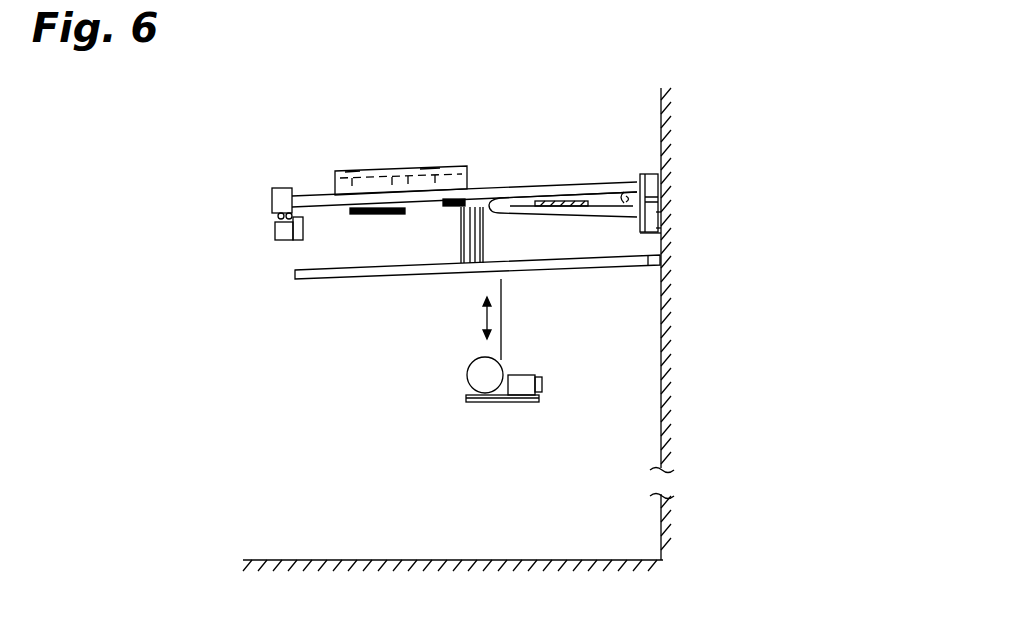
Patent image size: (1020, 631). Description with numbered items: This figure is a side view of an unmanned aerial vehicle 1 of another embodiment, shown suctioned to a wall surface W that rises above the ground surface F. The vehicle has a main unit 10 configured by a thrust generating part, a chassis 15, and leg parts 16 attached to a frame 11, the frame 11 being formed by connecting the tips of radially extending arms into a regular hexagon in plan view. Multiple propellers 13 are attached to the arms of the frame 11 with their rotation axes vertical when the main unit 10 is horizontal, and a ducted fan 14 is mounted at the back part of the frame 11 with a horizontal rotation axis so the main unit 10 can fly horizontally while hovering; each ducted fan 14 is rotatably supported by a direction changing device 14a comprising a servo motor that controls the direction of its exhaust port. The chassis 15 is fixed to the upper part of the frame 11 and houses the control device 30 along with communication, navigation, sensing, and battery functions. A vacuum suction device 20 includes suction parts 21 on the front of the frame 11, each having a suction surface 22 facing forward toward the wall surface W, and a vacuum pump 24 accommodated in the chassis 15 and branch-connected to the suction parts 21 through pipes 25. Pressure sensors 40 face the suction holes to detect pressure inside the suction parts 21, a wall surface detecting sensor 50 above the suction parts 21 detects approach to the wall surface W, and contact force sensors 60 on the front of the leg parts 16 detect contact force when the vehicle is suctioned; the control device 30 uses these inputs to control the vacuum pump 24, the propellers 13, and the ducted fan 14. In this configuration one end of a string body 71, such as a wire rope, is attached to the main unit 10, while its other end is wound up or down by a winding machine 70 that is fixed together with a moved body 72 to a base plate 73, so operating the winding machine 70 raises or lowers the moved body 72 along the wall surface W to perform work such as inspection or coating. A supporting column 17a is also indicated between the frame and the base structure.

The unmanned aerial vehicle 1 is at (574, 121).
The main unit 10 is at (524, 186).
The frame 11 is at (548, 187).
The propellers 13 is at (365, 215).
The ducted fan 14 is at (276, 232).
The direction changing device 14a is at (273, 199).
The chassis 15 is at (336, 176).
The leg parts 16 is at (426, 275).
The support column 17a is at (502, 263).
The vacuum suction device 20 is at (648, 237).
The suction parts 21 is at (658, 230).
The suction surface 22 is at (657, 214).
The vacuum pump 24 is at (428, 168).
The pipes 25 is at (506, 211).
The control device 30 is at (366, 170).
The pressure sensors 40 is at (636, 200).
The wall surface detecting sensor 50 is at (648, 174).
The contact force sensors 60 is at (656, 266).
The winding machine 70 is at (477, 380).
The string body 71 is at (503, 300).
The moved body 72 is at (520, 400).
The base plate 73 is at (470, 404).
The ground surface F is at (330, 558).
The wall surface W is at (661, 416).